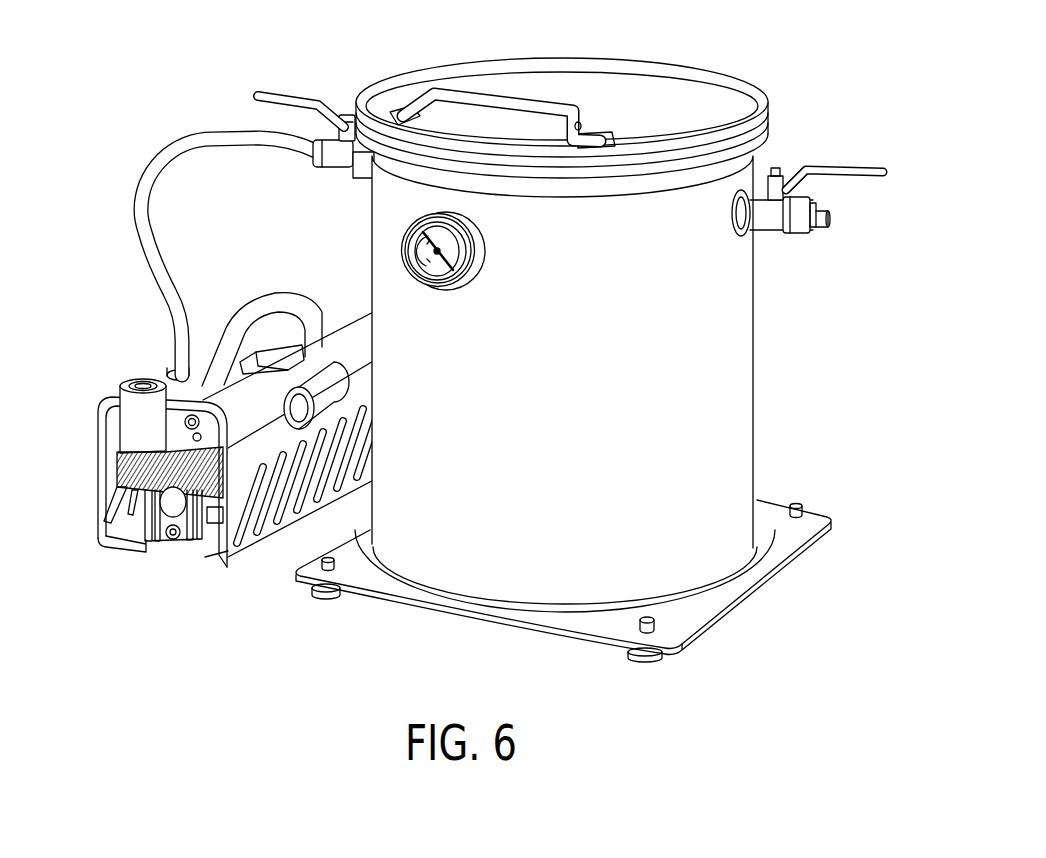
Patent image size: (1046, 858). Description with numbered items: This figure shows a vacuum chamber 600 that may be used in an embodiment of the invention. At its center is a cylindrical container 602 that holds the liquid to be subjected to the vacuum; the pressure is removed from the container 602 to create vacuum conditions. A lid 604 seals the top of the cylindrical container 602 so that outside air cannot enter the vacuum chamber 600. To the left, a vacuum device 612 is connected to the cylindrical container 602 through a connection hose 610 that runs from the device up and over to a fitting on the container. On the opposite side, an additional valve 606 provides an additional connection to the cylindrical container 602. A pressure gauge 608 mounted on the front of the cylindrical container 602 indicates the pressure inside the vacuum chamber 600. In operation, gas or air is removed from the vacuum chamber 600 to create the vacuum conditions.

The vacuum chamber 600 is at (459, 363).
The cylindrical container 602 is at (741, 416).
The lid 604 is at (720, 88).
The additional valve 606 is at (797, 231).
The pressure gauge 608 is at (440, 275).
The connection hose 610 is at (237, 132).
The vacuum device 612 is at (110, 425).